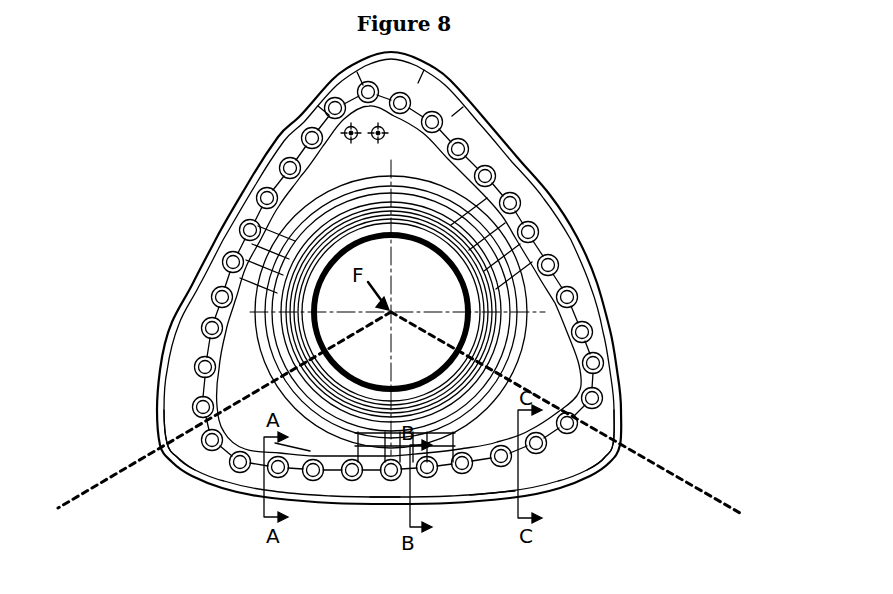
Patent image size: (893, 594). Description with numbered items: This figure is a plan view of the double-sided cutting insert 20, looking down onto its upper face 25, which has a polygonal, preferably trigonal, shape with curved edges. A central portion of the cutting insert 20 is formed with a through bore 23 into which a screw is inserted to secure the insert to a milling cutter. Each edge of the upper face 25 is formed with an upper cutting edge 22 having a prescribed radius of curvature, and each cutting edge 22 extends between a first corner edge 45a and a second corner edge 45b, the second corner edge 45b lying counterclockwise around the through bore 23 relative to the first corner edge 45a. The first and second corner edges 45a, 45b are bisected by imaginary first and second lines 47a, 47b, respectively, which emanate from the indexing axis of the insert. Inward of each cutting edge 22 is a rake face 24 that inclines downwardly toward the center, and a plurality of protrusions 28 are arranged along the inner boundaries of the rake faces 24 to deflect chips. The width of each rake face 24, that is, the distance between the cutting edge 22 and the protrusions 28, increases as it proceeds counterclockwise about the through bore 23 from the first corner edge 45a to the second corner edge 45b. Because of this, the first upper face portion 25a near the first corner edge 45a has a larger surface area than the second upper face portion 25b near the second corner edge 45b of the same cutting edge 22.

The cutting insert 20 is at (533, 145).
The upper cutting edge 22 is at (492, 500).
The through bore 23 is at (488, 246).
The rake face 24 is at (383, 493).
The upper face 25 is at (337, 162).
The first upper face portion 25a is at (247, 430).
The second upper face portion 25b is at (503, 418).
The protrusions 28 is at (292, 478).
The first corner edge 45a is at (177, 455).
The second corner edge 45b is at (610, 452).
The imaginary first line 47a is at (128, 467).
The imaginary second line 47b is at (697, 483).